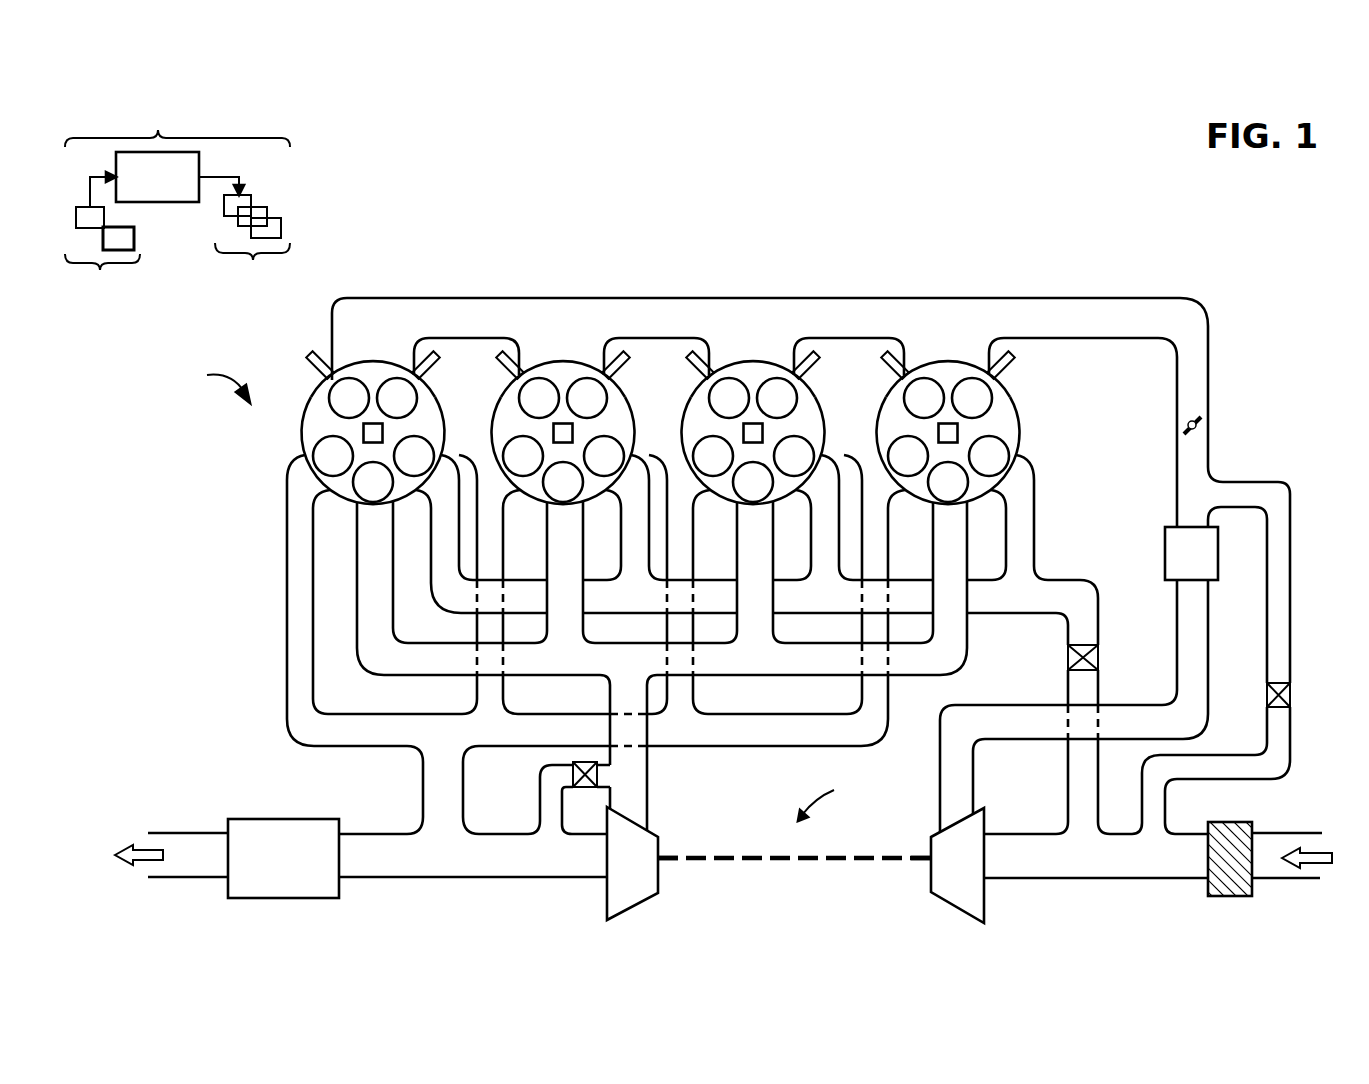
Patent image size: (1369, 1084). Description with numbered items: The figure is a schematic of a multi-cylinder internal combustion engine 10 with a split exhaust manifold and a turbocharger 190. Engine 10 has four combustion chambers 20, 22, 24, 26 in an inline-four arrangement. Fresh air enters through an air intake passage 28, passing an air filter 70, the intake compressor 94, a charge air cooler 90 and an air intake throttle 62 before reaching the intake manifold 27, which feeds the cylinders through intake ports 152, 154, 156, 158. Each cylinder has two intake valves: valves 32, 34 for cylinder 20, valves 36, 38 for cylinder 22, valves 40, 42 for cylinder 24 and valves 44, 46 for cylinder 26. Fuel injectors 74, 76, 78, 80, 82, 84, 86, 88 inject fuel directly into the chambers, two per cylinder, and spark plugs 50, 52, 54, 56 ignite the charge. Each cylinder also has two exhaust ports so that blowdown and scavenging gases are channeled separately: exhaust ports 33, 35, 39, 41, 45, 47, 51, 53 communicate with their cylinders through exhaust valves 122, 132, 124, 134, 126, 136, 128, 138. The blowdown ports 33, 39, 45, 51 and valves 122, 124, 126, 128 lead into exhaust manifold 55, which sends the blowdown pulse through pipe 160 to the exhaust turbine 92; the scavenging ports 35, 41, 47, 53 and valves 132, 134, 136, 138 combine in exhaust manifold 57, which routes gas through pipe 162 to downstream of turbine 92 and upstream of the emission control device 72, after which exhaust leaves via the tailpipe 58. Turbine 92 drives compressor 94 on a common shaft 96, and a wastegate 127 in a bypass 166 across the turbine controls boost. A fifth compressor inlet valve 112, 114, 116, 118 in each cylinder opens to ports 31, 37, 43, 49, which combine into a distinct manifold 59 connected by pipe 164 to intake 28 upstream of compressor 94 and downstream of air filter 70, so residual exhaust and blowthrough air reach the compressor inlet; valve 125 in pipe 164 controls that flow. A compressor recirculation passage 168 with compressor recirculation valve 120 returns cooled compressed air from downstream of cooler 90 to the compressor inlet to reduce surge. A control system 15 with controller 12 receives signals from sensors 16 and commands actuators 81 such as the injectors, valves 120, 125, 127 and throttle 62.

The engine 10 is at (218, 386).
The controller 12 is at (167, 179).
The control system 15 is at (177, 124).
The sensors 16 is at (102, 258).
The actuators 81 is at (253, 243).
The combustion chamber 20 is at (1020, 440).
The combustion chamber 22 is at (822, 413).
The combustion chamber 24 is at (636, 428).
The combustion chamber 26 is at (301, 443).
The intake manifold 27 is at (770, 412).
The air intake passage 28 is at (1292, 855).
The port 31 is at (1022, 488).
The intake valve 32 is at (972, 398).
The exhaust port 33 is at (955, 505).
The intake valve 34 is at (924, 398).
The exhaust port 35 is at (883, 482).
The intake valve 36 is at (777, 398).
The port 37 is at (822, 490).
The intake valve 38 is at (729, 398).
The exhaust port 39 is at (760, 505).
The intake valve 40 is at (587, 398).
The exhaust port 41 is at (683, 482).
The intake valve 42 is at (539, 398).
The port 43 is at (634, 517).
The intake valve 44 is at (397, 398).
The exhaust port 45 is at (568, 503).
The intake valve 46 is at (349, 398).
The exhaust port 47 is at (495, 490).
The port 49 is at (434, 483).
The spark plug 50 is at (958, 433).
The exhaust port 51 is at (377, 507).
The spark plug 52 is at (744, 430).
The exhaust port 53 is at (296, 473).
The spark plug 54 is at (554, 433).
The exhaust manifold 55 is at (662, 659).
The spark plug 56 is at (364, 433).
The exhaust manifold 57 is at (594, 730).
The tailpipe 58 is at (171, 855).
The manifold 59 is at (758, 596).
The air intake throttle 62 is at (1203, 426).
The air filter 70 is at (1240, 822).
The emission control device 72 is at (283, 858).
The fuel injector 74 is at (1020, 360).
The fuel injector 76 is at (877, 360).
The fuel injector 78 is at (804, 371).
The fuel injector 80 is at (684, 358).
The fuel injector 82 is at (614, 371).
The fuel injector 84 is at (494, 362).
The fuel injector 86 is at (415, 374).
The fuel injector 88 is at (308, 357).
The charge air cooler 90 is at (1079, 679).
The exhaust turbine 92 is at (498, 863).
The intake compressor 94 is at (1069, 865).
The common shaft 96 is at (742, 856).
The compressor inlet valve 112 is at (989, 456).
The compressor inlet valve 114 is at (794, 456).
The compressor inlet valve 116 is at (604, 456).
The compressor inlet valve 118 is at (414, 456).
The compressor recirculation valve 120 is at (1291, 697).
The exhaust valve 122 is at (948, 482).
The exhaust valve 124 is at (753, 482).
The valve 125 is at (1067, 655).
The exhaust valve 126 is at (563, 482).
The wastegate 127 is at (598, 773).
The exhaust valve 128 is at (373, 482).
The exhaust valve 132 is at (908, 456).
The exhaust valve 134 is at (713, 456).
The exhaust valve 136 is at (523, 456).
The exhaust valve 138 is at (333, 456).
The intake port 152 is at (940, 362).
The intake port 154 is at (757, 362).
The intake port 156 is at (542, 362).
The intake port 158 is at (377, 362).
The pipe 160 is at (648, 802).
The pipe 162 is at (423, 767).
The pipe 164 is at (1099, 612).
The bypass 166 is at (540, 782).
The compressor recirculation passage 168 is at (1291, 532).
The turbocharger 190 is at (831, 798).